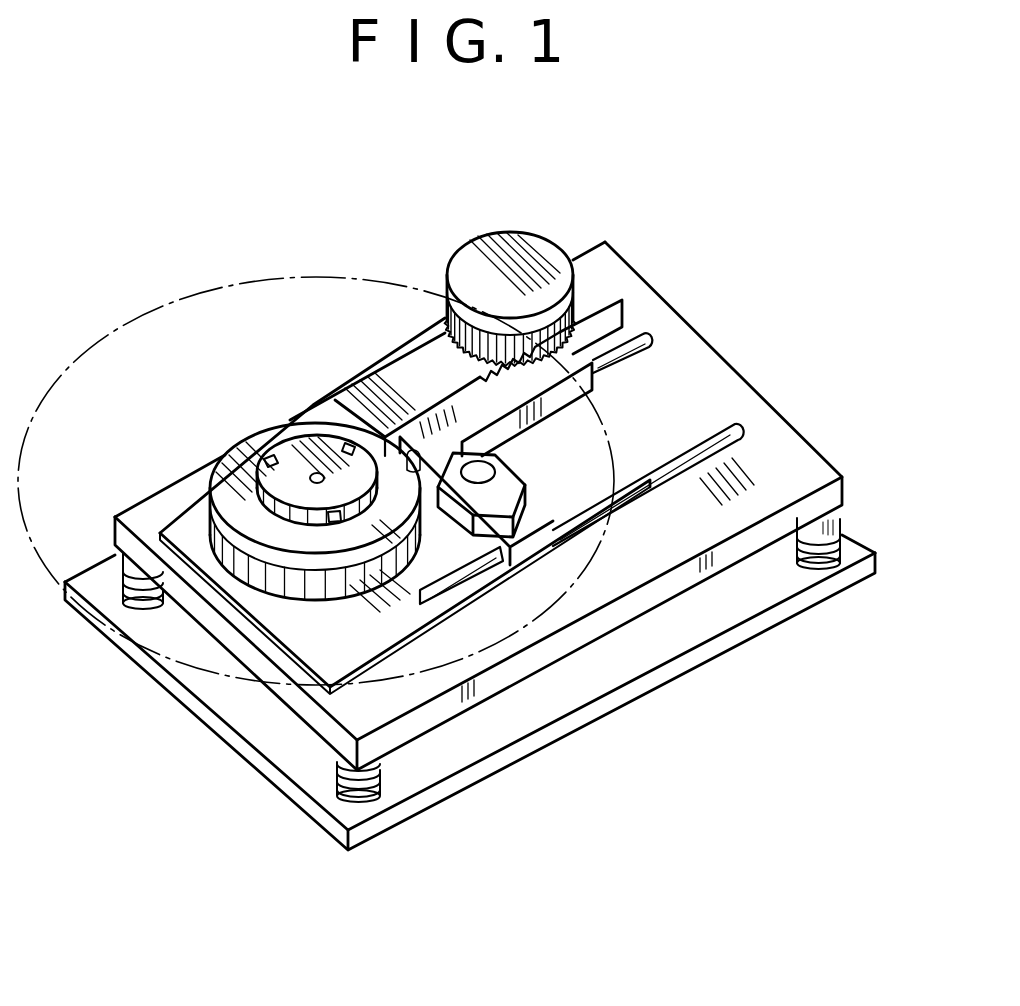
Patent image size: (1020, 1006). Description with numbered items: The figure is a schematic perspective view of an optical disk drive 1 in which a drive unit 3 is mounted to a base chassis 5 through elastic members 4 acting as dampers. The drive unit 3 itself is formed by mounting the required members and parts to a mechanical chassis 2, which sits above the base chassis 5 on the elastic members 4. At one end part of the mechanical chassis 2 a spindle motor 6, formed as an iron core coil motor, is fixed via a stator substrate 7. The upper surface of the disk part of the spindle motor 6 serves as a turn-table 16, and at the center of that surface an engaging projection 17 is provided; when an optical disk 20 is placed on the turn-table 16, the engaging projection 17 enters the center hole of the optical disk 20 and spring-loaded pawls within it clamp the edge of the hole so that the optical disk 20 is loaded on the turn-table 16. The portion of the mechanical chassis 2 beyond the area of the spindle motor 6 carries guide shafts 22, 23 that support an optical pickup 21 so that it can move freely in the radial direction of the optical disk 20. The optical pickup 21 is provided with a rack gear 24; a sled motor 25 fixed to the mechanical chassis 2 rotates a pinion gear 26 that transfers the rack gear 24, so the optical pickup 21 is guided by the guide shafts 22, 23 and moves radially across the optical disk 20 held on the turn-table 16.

The optical disk drive 1 is at (265, 245).
The mechanical chassis 2 is at (800, 463).
The drive unit 3 is at (580, 640).
The elastic member (damper) 4 is at (130, 603).
The base chassis 5 is at (267, 757).
The spindle motor 6 is at (327, 592).
The stator substrate 7 is at (247, 597).
The turn-table 16 is at (233, 470).
The engaging projection 17 is at (300, 440).
The optical disk 20 is at (82, 362).
The optical pickup 21 is at (503, 480).
The guide shaft 22 is at (645, 360).
The guide shaft 23 is at (703, 440).
The rack gear 24 is at (487, 375).
The sled motor 25 is at (535, 243).
The pinion gear 26 is at (603, 305).